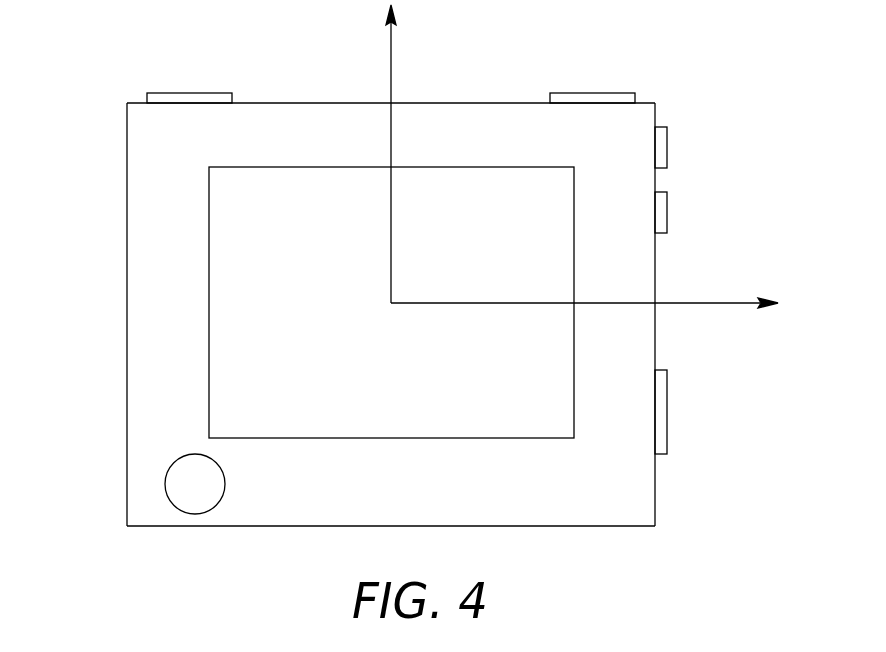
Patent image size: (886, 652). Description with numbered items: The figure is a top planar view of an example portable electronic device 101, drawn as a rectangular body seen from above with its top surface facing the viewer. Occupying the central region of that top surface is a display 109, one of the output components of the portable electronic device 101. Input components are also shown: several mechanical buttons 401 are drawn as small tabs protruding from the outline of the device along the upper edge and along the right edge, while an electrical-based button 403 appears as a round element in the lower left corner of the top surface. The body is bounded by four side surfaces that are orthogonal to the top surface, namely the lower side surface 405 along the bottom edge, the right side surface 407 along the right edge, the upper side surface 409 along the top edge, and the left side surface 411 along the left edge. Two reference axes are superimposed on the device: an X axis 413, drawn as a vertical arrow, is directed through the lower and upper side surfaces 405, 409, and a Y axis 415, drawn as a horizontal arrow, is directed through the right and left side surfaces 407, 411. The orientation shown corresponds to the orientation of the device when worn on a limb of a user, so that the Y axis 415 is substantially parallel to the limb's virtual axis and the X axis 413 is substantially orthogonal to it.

The portable electronic device 101 is at (389, 311).
The display 109 is at (218, 234).
The mechanical buttons 401 is at (172, 92).
The electrical-based buttons 403 is at (175, 495).
The lower side surface 405 is at (630, 528).
The right side surface 407 is at (655, 492).
The upper side surface 409 is at (324, 103).
The left side surface 411 is at (127, 372).
The X axis 413 is at (389, 216).
The Y axis 415 is at (443, 305).